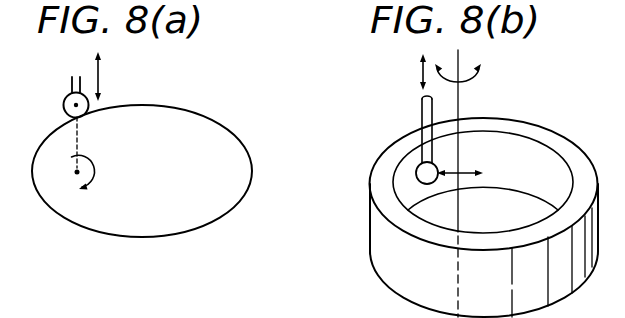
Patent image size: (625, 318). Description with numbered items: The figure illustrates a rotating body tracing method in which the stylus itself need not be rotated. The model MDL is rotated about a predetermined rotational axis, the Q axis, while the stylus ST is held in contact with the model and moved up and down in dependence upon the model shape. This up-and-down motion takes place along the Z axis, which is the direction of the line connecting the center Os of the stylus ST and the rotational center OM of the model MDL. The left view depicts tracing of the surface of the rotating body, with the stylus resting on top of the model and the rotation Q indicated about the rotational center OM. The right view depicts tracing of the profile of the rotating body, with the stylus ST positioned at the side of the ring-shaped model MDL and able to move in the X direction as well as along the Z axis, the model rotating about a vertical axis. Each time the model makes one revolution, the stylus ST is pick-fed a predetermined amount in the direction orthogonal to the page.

In FIG. 8A, the stylus ST is at (67, 95).
In FIG. 8A, the center of the stylus Os is at (63, 105).
In FIG. 8A, the rotational center of the model OM is at (73, 177).
In FIG. 8A, the model MDL is at (249, 151).
In FIG. 8A, the Z axis Z is at (107, 76).
In FIG. 8B, the Z axis Z is at (413, 72).
In FIG. 8A, the Q axis Q is at (93, 172).
In FIG. 8B, the X axis X is at (470, 173).